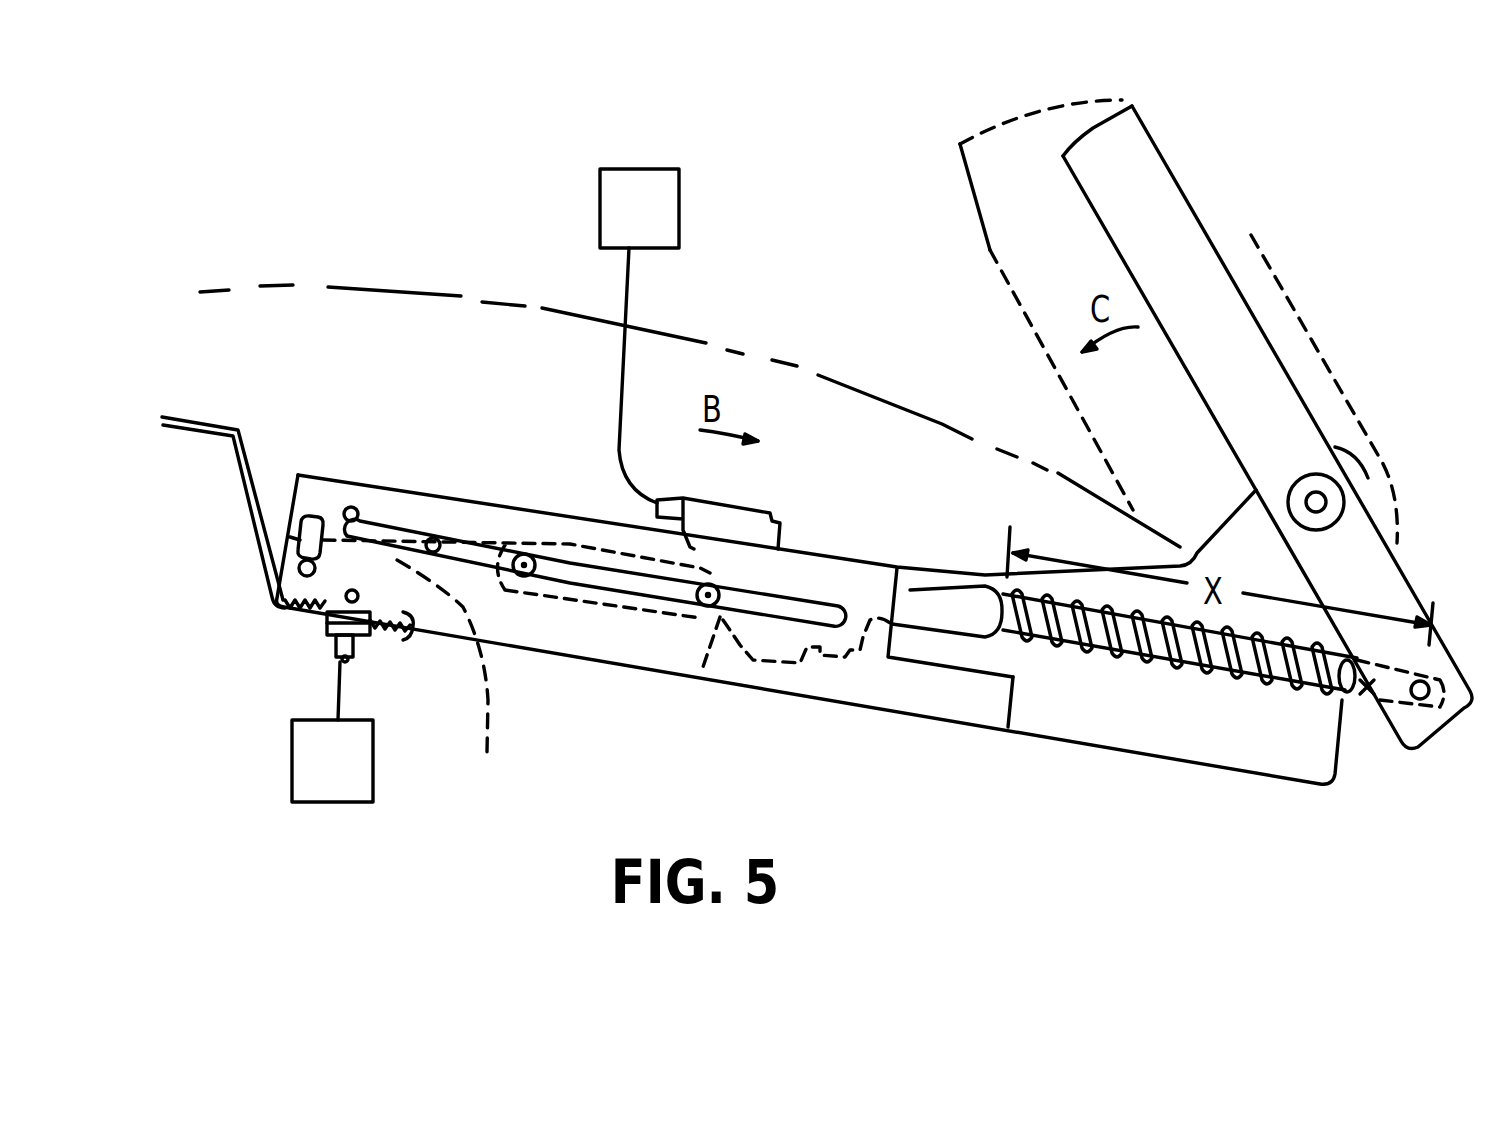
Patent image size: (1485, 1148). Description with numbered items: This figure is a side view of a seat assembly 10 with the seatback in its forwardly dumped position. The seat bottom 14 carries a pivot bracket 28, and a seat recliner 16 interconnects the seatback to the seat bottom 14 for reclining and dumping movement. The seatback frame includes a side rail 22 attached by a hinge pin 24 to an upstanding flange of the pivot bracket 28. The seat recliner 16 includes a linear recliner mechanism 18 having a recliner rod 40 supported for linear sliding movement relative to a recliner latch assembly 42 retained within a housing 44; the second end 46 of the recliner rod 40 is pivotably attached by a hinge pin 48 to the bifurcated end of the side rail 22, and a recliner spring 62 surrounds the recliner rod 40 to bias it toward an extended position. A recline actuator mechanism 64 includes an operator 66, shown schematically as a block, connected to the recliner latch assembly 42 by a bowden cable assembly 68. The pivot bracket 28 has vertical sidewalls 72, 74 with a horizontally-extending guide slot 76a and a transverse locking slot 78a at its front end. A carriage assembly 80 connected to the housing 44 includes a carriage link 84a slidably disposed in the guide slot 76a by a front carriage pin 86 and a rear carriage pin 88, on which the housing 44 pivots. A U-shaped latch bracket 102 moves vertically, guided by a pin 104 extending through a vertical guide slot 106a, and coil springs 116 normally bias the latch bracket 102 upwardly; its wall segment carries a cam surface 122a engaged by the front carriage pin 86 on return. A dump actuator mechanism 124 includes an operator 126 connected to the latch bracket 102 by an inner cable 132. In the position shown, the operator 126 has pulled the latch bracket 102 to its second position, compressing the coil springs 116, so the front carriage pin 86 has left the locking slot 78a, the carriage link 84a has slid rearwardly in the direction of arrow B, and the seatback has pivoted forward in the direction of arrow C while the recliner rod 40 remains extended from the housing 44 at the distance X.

The seat assembly 10 is at (772, 190).
The seat bottom 14 is at (424, 316).
The seat recliner 16 is at (812, 437).
The linear recliner mechanism 18 is at (912, 595).
The side rail 22 is at (1163, 212).
The hinge pin 24 is at (1316, 502).
The pivot bracket 28 is at (1266, 745).
The recliner rod 40 is at (1182, 667).
The recliner latch assembly 42 is at (745, 530).
The housing 44 is at (940, 592).
The second end 46 is at (1366, 700).
The hinge pin 48 is at (1424, 700).
The recliner spring 62 is at (1083, 652).
The recline actuator mechanism 64 is at (689, 290).
The operator 66 is at (639, 208).
The bowden cable assembly 68 is at (623, 377).
The sidewall 72 is at (927, 696).
The sidewall 74 is at (1107, 725).
The guide slot 76a is at (437, 542).
The locking slot 78a is at (357, 509).
The carriage assembly 80 is at (572, 545).
The carriage link 84a is at (630, 607).
The front carriage pin 86 is at (525, 578).
The rear carriage pin 88 is at (713, 630).
The latch bracket 102 is at (392, 600).
The pin 104 is at (300, 573).
The vertical guide slot 106a is at (312, 516).
The coil springs 116 is at (323, 617).
The cam surface 122a is at (465, 680).
The dump actuator mechanism 124 is at (403, 742).
The operator 126 is at (332, 732).
The inner cable 132 is at (340, 660).